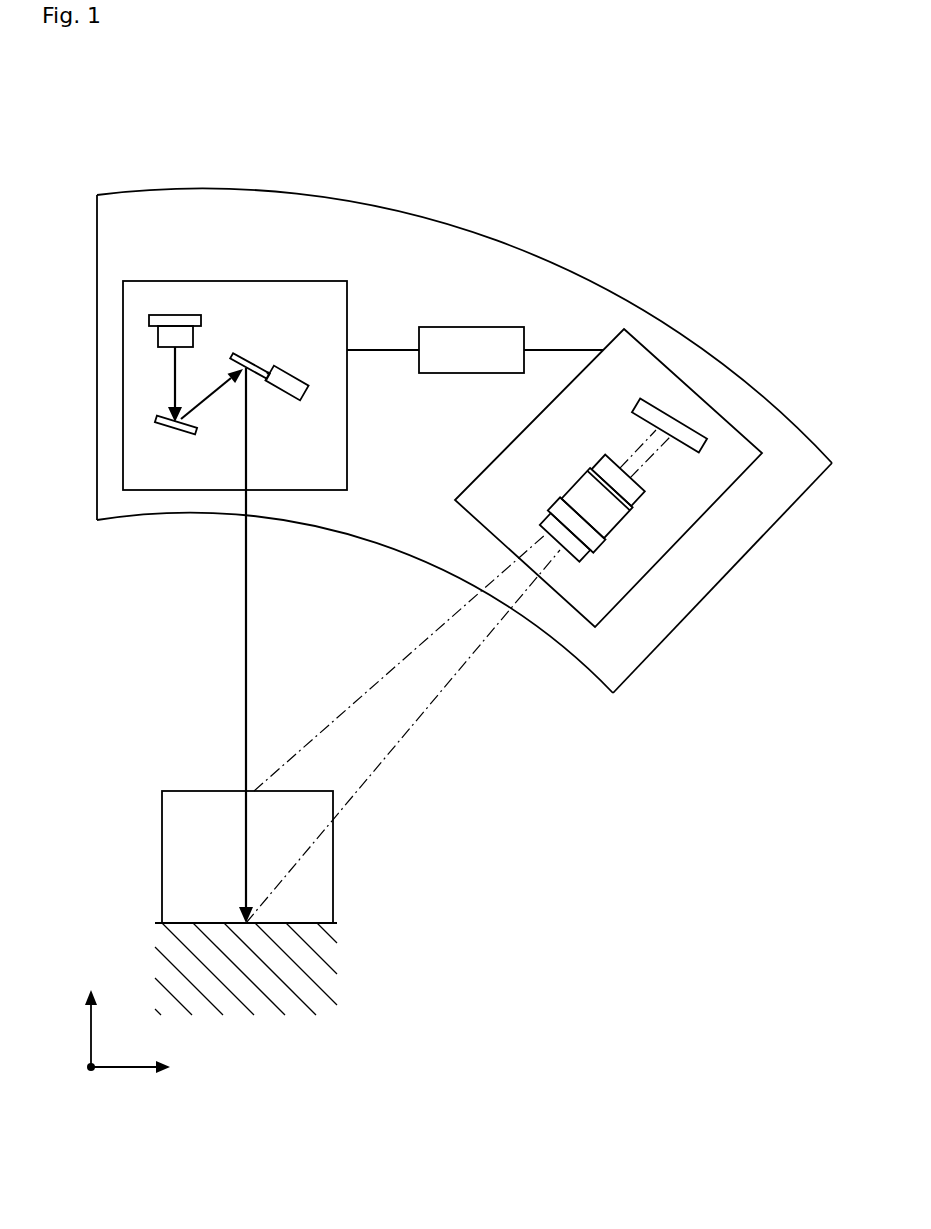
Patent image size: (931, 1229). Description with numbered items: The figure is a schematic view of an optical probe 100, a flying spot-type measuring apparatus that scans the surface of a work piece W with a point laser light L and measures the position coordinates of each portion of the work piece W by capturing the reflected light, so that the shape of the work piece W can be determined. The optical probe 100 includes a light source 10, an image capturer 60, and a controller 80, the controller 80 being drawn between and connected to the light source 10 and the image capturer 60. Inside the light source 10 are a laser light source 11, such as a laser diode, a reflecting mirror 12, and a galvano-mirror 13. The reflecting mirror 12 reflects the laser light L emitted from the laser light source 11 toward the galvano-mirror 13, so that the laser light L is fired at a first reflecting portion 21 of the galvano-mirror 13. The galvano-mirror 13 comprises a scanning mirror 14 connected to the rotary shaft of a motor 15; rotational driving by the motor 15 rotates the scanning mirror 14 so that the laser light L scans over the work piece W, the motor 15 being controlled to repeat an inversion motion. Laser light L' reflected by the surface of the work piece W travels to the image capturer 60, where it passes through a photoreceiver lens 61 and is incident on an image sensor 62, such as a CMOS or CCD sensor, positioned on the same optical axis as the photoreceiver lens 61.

The optical probe 100 is at (437, 176).
The light source 10 is at (237, 281).
The laser light source 11 is at (172, 315).
The reflecting mirror 12 is at (167, 432).
The galvano-mirror 13 is at (270, 345).
The scanning mirror 14 is at (243, 355).
The motor 15 is at (296, 372).
The first reflecting portion 21 is at (258, 383).
The controller 80 is at (473, 327).
The image capturer 60 is at (677, 375).
The photoreceiver lens 61 is at (610, 530).
The image sensor 62 is at (690, 423).
The laser light L is at (162, 635).
The reflected laser light L' is at (458, 676).
The work piece W is at (162, 855).